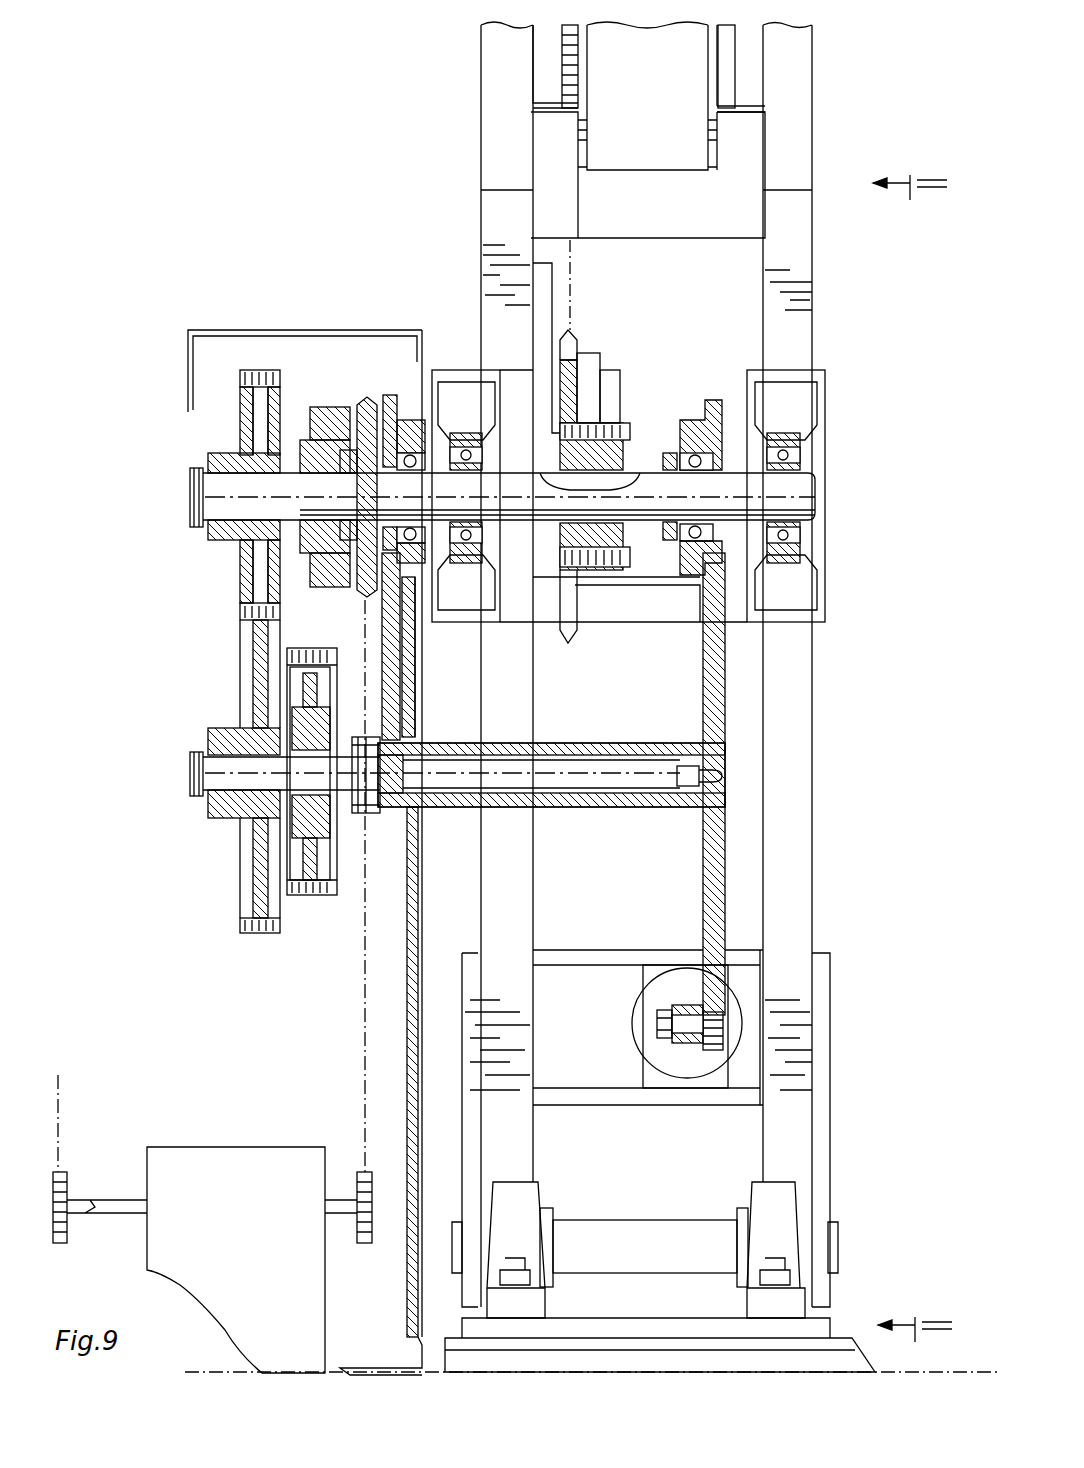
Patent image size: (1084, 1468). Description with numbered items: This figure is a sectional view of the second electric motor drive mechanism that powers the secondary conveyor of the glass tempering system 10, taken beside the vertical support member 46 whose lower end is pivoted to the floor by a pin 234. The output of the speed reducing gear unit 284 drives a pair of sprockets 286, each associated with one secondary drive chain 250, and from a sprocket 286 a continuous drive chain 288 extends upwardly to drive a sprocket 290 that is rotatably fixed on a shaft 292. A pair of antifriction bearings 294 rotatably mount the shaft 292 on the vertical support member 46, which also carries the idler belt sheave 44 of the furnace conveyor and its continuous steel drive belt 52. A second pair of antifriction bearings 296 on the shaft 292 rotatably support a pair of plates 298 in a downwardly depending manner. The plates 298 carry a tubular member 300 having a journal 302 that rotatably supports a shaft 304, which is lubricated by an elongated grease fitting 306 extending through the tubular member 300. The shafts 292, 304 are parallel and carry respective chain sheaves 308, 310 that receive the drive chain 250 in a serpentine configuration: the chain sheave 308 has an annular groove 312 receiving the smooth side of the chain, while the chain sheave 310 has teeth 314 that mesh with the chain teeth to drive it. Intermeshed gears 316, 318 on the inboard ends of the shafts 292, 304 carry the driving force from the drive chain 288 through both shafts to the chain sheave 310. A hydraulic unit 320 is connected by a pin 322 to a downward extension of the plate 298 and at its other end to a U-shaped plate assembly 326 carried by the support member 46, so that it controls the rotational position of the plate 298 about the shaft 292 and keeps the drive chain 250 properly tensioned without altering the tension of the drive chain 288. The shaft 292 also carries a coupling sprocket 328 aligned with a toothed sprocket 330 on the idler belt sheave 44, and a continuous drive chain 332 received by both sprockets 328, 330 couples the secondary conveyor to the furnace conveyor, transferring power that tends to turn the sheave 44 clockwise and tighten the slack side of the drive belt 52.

The section line 10 is at (912, 745).
The idler belt sheave 44 is at (725, 70).
The vertical support member 46 is at (495, 225).
The drive belt 52 is at (630, 145).
The pin 234 is at (640, 1248).
The drive chain 250 is at (290, 630).
The speed reducing gear unit 284 is at (245, 1160).
The sprocket 286 is at (67, 1185).
The drive chain 288 is at (360, 1025).
The sprocket 290 is at (365, 410).
The shaft 292 is at (215, 487).
The antifriction bearing 294 is at (462, 455).
The antifriction bearing 296 is at (392, 440).
The plate 298 is at (395, 652).
The tubular member 300 is at (650, 800).
The journal 302 is at (368, 818).
The shaft 304 is at (215, 765).
The grease fitting 306 is at (640, 775).
The chain sheave 308 is at (268, 428).
The chain sheave 310 is at (305, 678).
The annular groove 312 is at (322, 407).
The teeth 314 is at (300, 896).
The gear 316 is at (258, 560).
The gear 318 is at (245, 705).
The hydraulic unit 320 is at (650, 1040).
The pin 322 is at (680, 1045).
The U-shaped plate assembly 326 is at (642, 975).
The coupling sprocket 328 is at (568, 380).
The toothed sprocket 330 is at (568, 58).
The drive chain 332 is at (575, 300).